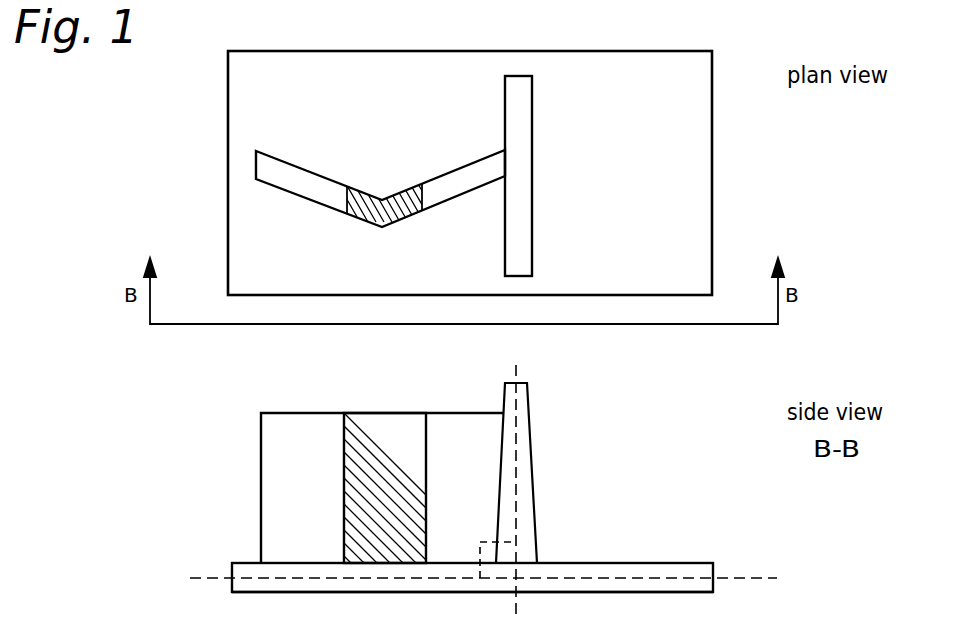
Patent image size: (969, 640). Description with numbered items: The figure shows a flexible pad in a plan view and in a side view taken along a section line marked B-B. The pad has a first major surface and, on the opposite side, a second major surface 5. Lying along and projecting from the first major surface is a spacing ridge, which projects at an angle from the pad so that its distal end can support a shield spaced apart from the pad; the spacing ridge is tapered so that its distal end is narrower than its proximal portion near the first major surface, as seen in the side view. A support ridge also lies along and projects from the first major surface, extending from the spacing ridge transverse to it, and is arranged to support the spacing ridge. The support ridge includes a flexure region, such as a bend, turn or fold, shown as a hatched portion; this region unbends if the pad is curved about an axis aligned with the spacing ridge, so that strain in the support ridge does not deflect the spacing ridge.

The second major surface 5 is at (649, 594).